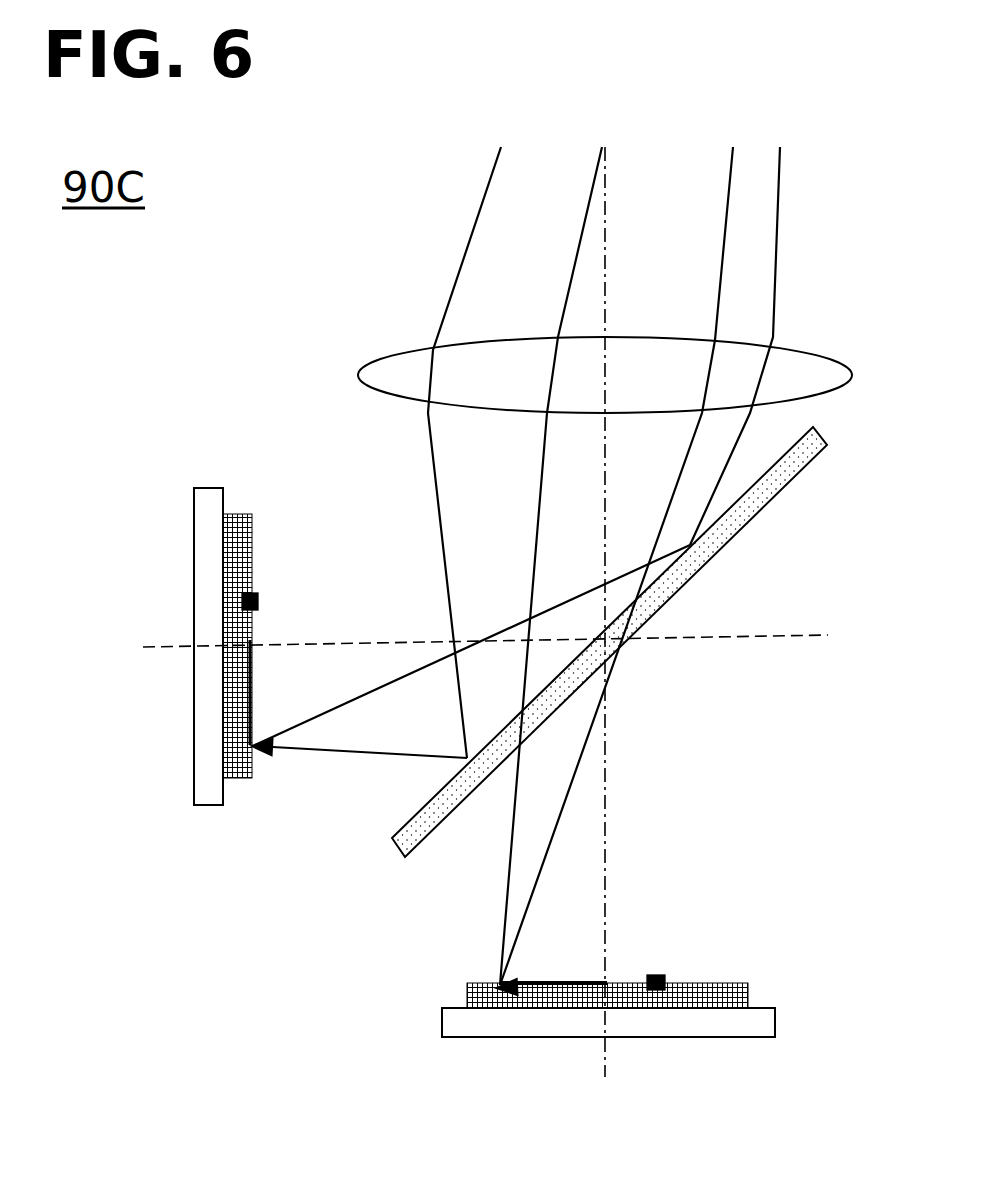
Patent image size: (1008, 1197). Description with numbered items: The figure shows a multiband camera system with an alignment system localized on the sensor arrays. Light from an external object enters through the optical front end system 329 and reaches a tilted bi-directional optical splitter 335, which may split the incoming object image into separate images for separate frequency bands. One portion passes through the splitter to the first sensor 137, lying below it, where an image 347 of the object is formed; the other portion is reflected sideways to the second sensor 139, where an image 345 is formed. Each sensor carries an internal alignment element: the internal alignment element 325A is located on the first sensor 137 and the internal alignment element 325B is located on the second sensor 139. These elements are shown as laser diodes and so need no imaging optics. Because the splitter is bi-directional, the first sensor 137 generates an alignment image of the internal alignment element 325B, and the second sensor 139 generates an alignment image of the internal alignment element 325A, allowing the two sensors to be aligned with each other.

The optical front end system 329 is at (392, 353).
The bi-directional optical splitter 335 is at (400, 857).
The second sensor 139 is at (197, 805).
The first sensor 137 is at (720, 978).
The internal alignment element 325A is at (654, 962).
The internal alignment element 325B is at (262, 601).
The image 345 is at (260, 680).
The image 347 is at (555, 970).